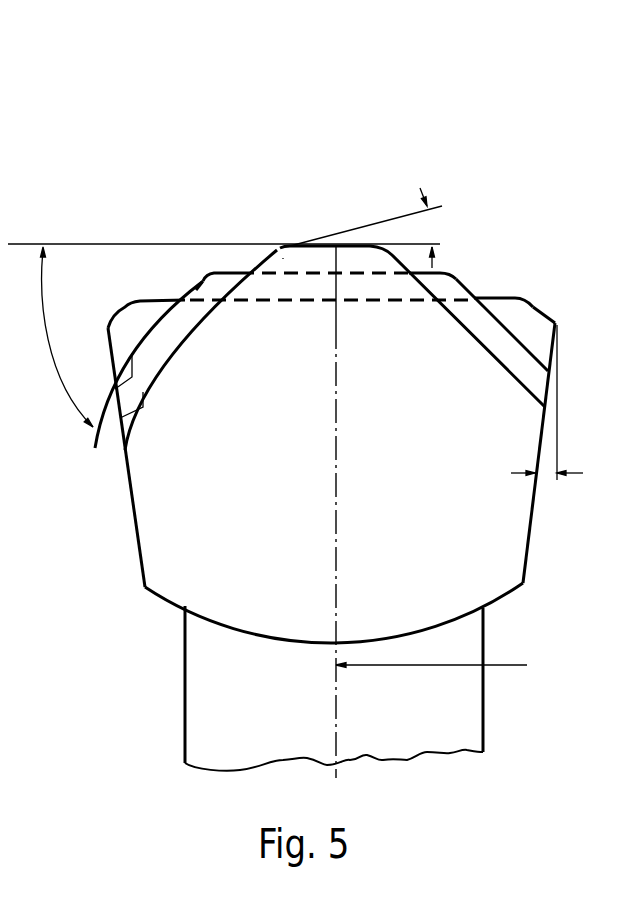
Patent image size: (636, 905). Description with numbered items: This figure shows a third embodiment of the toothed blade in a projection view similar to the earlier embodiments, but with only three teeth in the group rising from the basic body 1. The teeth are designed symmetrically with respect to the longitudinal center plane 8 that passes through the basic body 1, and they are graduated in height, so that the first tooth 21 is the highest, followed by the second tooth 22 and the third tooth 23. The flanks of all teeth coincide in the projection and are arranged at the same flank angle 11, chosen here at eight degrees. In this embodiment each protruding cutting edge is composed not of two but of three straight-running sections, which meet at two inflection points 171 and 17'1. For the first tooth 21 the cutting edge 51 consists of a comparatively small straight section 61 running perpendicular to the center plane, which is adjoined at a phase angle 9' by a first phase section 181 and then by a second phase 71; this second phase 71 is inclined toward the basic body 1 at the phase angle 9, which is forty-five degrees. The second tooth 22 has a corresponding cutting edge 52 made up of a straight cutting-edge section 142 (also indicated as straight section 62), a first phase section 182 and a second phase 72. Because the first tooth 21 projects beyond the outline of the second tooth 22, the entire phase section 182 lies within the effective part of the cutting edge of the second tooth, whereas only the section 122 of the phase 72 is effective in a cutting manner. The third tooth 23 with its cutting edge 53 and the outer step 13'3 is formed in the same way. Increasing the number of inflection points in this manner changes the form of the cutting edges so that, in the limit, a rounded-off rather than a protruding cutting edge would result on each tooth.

The basic body 1 is at (420, 700).
The longitudinal center plane 8 is at (443, 670).
The phase angle 9 is at (67, 337).
The phase angle 9' is at (366, 228).
The flank angle 11 is at (548, 402).
The first tooth 21 is at (375, 380).
The second tooth 22 is at (513, 362).
The third tooth 23 is at (533, 335).
The cutting edge of the first tooth 51 is at (438, 288).
The cutting edge of the second tooth 52 is at (452, 268).
The cutting edge of the third tooth 53 is at (523, 298).
The straight section 61 is at (323, 245).
The straight section of the second tooth 62 is at (367, 270).
The second phase of the first tooth 71 is at (143, 395).
The second phase of the second tooth 72 is at (133, 372).
The effective section of the phase 122 is at (196, 284).
The outer step face 13'3 is at (131, 219).
The straight cutting-edge section 142 is at (242, 272).
The first phase section 181 is at (287, 247).
The first phase section 182 is at (204, 281).
The inflection point 171 is at (298, 268).
The inflection point 17'1 is at (164, 420).